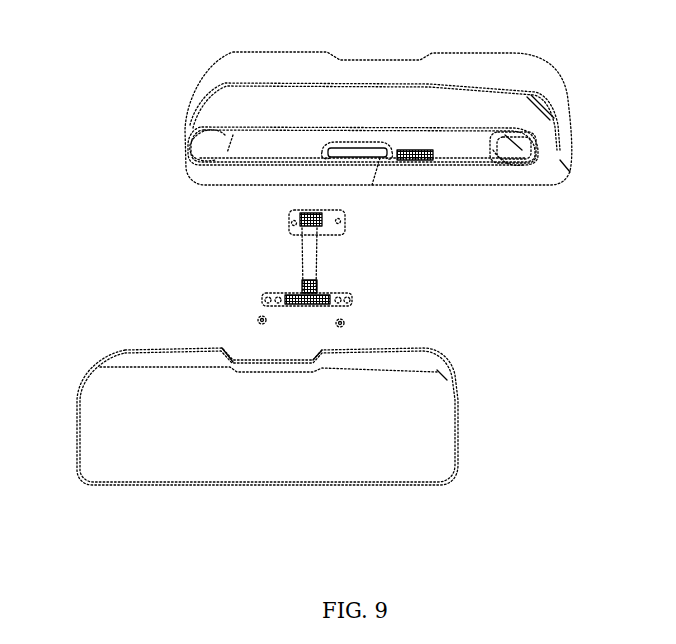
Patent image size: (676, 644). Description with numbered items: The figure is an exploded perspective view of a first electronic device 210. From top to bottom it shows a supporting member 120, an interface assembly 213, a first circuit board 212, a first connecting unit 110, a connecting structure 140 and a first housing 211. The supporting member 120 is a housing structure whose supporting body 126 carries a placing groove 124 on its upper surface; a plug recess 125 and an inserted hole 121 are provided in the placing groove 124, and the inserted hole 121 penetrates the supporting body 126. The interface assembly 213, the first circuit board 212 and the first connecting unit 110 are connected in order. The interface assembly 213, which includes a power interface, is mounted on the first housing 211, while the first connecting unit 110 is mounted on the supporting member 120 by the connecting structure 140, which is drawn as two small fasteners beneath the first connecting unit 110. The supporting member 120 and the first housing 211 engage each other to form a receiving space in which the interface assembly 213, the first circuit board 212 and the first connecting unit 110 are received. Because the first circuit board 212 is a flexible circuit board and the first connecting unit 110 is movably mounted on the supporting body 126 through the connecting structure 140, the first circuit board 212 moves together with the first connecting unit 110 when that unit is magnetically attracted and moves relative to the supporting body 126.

The first electronic device 210 is at (103, 103).
The supporting member 120 is at (477, 77).
The supporting body 126 is at (277, 102).
The plug recess 125 is at (327, 140).
The placing groove 124 is at (497, 152).
The inserted hole 121 is at (330, 142).
The interface assembly 213 is at (327, 218).
The first circuit board 212 is at (310, 260).
The first connecting unit 110 is at (347, 301).
The connecting structure 140 is at (260, 318).
The first housing 211 is at (428, 445).